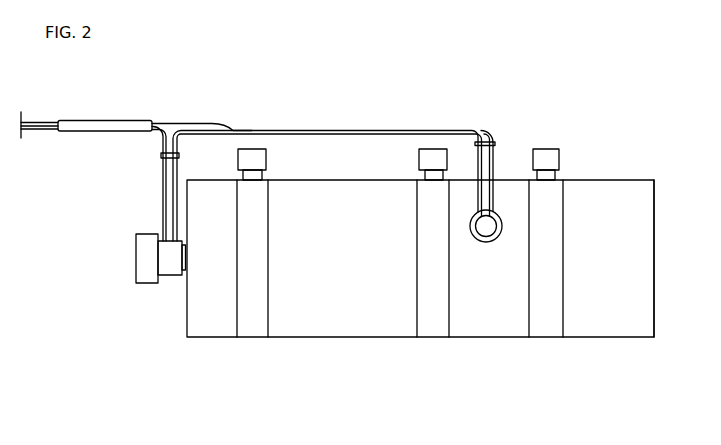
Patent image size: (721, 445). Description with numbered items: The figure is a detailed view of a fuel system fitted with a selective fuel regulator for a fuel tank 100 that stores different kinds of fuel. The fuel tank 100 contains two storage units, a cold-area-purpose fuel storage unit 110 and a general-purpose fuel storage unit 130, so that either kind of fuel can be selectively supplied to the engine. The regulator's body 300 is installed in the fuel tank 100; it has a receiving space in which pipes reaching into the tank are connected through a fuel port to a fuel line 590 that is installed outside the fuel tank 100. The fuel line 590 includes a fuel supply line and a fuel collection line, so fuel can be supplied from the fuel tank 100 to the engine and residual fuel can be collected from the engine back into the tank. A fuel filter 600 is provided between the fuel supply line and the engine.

The fuel tank 100 is at (351, 342).
The cold-area-purpose fuel storage unit 110 is at (608, 195).
The general-purpose fuel storage unit 130 is at (510, 190).
The body 300 is at (486, 226).
The fuel line 590 is at (317, 124).
The fuel filter 600 is at (150, 258).